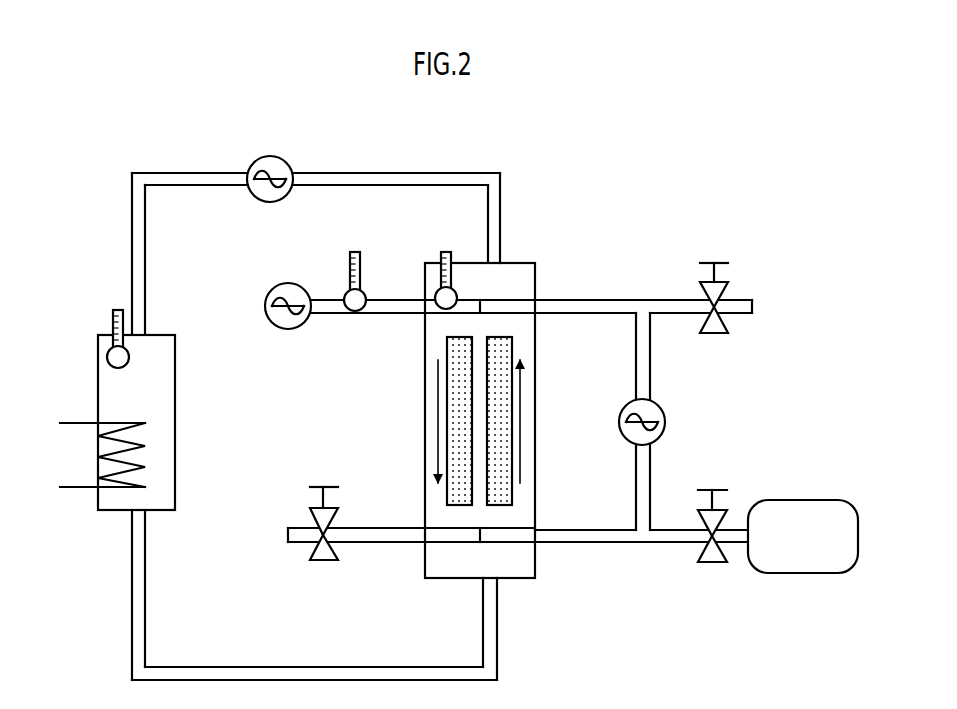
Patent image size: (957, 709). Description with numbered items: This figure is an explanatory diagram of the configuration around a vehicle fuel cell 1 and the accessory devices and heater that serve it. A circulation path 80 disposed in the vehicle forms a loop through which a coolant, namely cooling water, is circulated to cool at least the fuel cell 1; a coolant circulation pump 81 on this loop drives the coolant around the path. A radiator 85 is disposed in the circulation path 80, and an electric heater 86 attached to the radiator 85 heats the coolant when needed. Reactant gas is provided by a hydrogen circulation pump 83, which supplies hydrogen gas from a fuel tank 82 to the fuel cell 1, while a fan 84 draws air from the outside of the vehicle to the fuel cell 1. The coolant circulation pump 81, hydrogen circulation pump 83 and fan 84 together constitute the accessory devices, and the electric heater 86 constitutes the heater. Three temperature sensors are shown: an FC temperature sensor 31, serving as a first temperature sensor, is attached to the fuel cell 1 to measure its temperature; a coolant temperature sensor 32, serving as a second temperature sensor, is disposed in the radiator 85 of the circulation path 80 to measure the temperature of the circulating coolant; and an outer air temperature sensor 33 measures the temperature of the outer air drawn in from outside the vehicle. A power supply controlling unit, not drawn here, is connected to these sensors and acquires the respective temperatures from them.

The fuel cell 1 is at (577, 231).
The circulation path 80 is at (416, 172).
The coolant circulation pump 81 is at (267, 203).
The fan 84 is at (288, 330).
The hydrogen circulation pump 83 is at (666, 423).
The outer air temperature sensor 33 is at (352, 250).
The FC temperature sensor 31 is at (443, 250).
The coolant temperature sensor 32 is at (112, 318).
The radiator 85 is at (177, 418).
The electric heater 86 is at (66, 490).
The fuel tank 82 is at (829, 498).